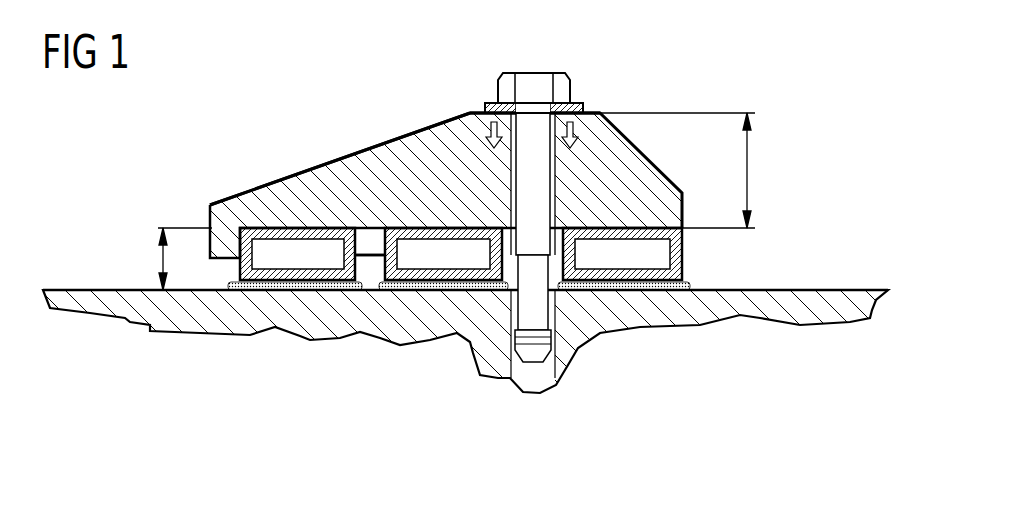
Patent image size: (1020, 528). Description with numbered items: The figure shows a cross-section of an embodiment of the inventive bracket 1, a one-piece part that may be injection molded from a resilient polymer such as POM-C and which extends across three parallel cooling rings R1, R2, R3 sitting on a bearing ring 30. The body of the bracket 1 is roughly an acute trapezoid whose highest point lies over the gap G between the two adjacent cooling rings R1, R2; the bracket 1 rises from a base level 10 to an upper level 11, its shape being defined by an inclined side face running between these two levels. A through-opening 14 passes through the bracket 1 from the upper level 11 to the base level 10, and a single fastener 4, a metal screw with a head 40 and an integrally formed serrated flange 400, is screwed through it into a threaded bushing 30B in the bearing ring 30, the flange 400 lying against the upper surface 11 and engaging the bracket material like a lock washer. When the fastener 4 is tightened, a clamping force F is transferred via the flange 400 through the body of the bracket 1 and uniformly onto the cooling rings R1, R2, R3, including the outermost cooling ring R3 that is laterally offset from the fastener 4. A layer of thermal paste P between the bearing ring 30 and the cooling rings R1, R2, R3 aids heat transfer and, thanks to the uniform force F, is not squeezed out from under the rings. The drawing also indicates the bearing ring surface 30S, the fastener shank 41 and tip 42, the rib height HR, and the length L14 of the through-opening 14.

The bracket 1 is at (342, 149).
The base level 10 is at (252, 222).
The upper level 11 is at (592, 112).
The fastener 4 is at (624, 254).
The through-opening 14 is at (543, 215).
The head 40 is at (497, 92).
The flange 400 is at (581, 103).
The bolt shank 41 is at (532, 225).
The bolt tip 42 is at (556, 312).
The bearing ring 30 is at (772, 300).
The base surface 30S is at (90, 288).
The threaded bushing 30B is at (538, 368).
The clamping force F is at (477, 128).
The gap G is at (370, 260).
The thermal paste P is at (238, 289).
The cooling ring R1 is at (625, 262).
The cooling ring R2 is at (445, 262).
The outermost cooling ring R3 is at (305, 262).
The rib height HR is at (166, 235).
The hole length L14 is at (748, 170).